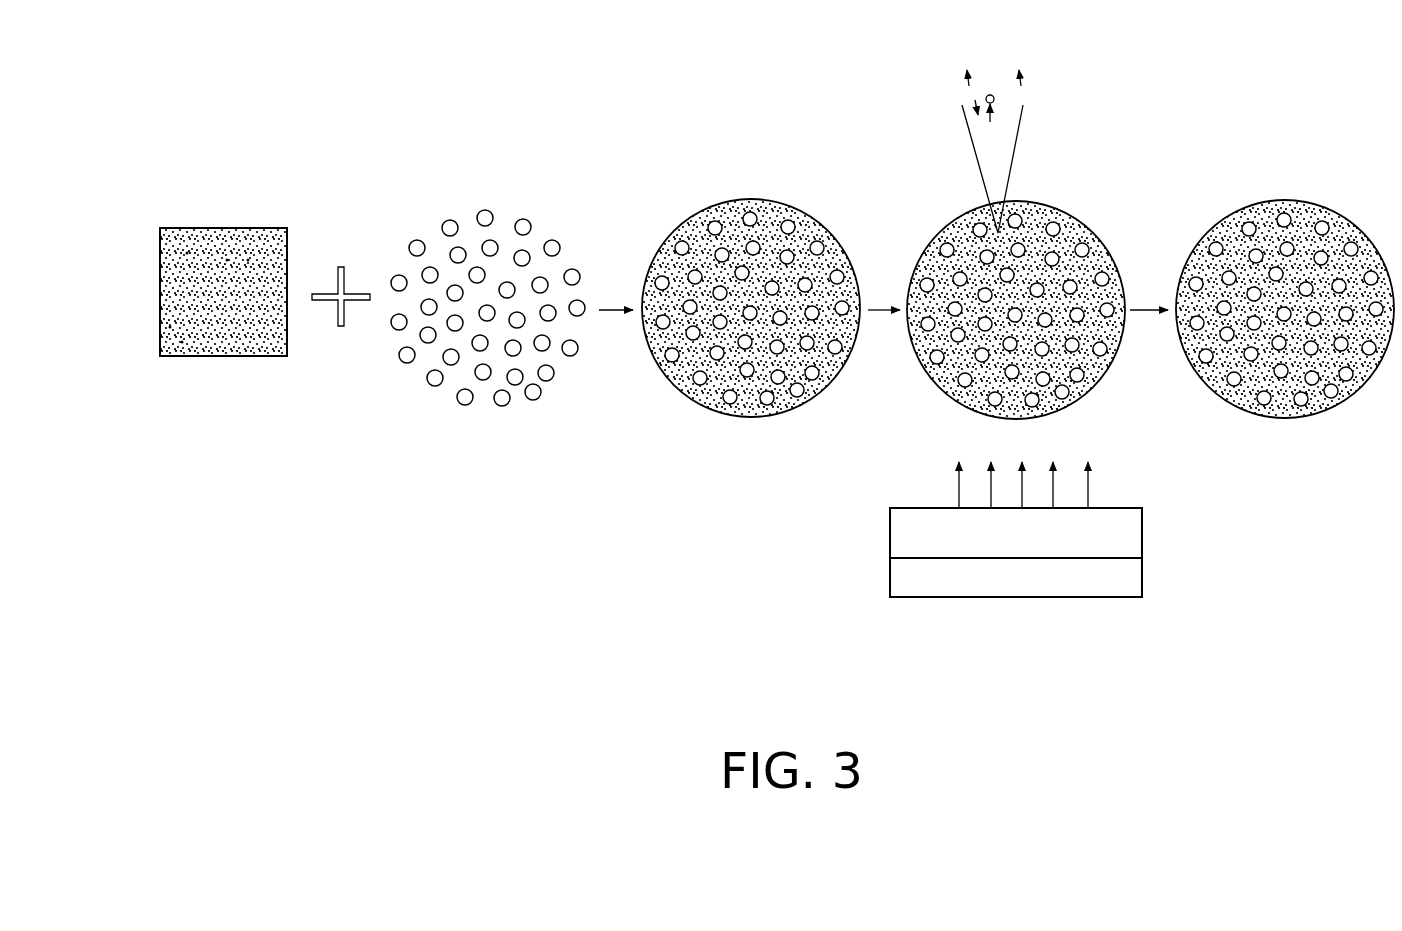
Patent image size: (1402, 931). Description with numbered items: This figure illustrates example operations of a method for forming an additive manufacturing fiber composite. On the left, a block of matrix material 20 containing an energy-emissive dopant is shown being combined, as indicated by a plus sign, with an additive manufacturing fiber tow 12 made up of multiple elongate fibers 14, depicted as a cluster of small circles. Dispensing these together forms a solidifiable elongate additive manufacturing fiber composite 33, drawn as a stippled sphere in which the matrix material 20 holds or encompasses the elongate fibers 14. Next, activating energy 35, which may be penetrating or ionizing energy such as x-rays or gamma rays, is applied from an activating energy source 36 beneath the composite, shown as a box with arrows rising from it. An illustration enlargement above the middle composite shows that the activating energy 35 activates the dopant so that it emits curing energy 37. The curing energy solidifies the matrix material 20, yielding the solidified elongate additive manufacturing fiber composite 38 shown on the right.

The additive manufacturing fiber tow 12 is at (488, 315).
The elongate fibers 14 is at (481, 212).
The matrix material 20 is at (237, 357).
The solidifiable elongate additive manufacturing fiber composite 33 is at (702, 422).
The activating energy 35 is at (990, 122).
The activating energy source 36 is at (890, 533).
The curing energy 37 is at (975, 100).
The solidified elongate additive manufacturing fiber composite 38 is at (1248, 423).